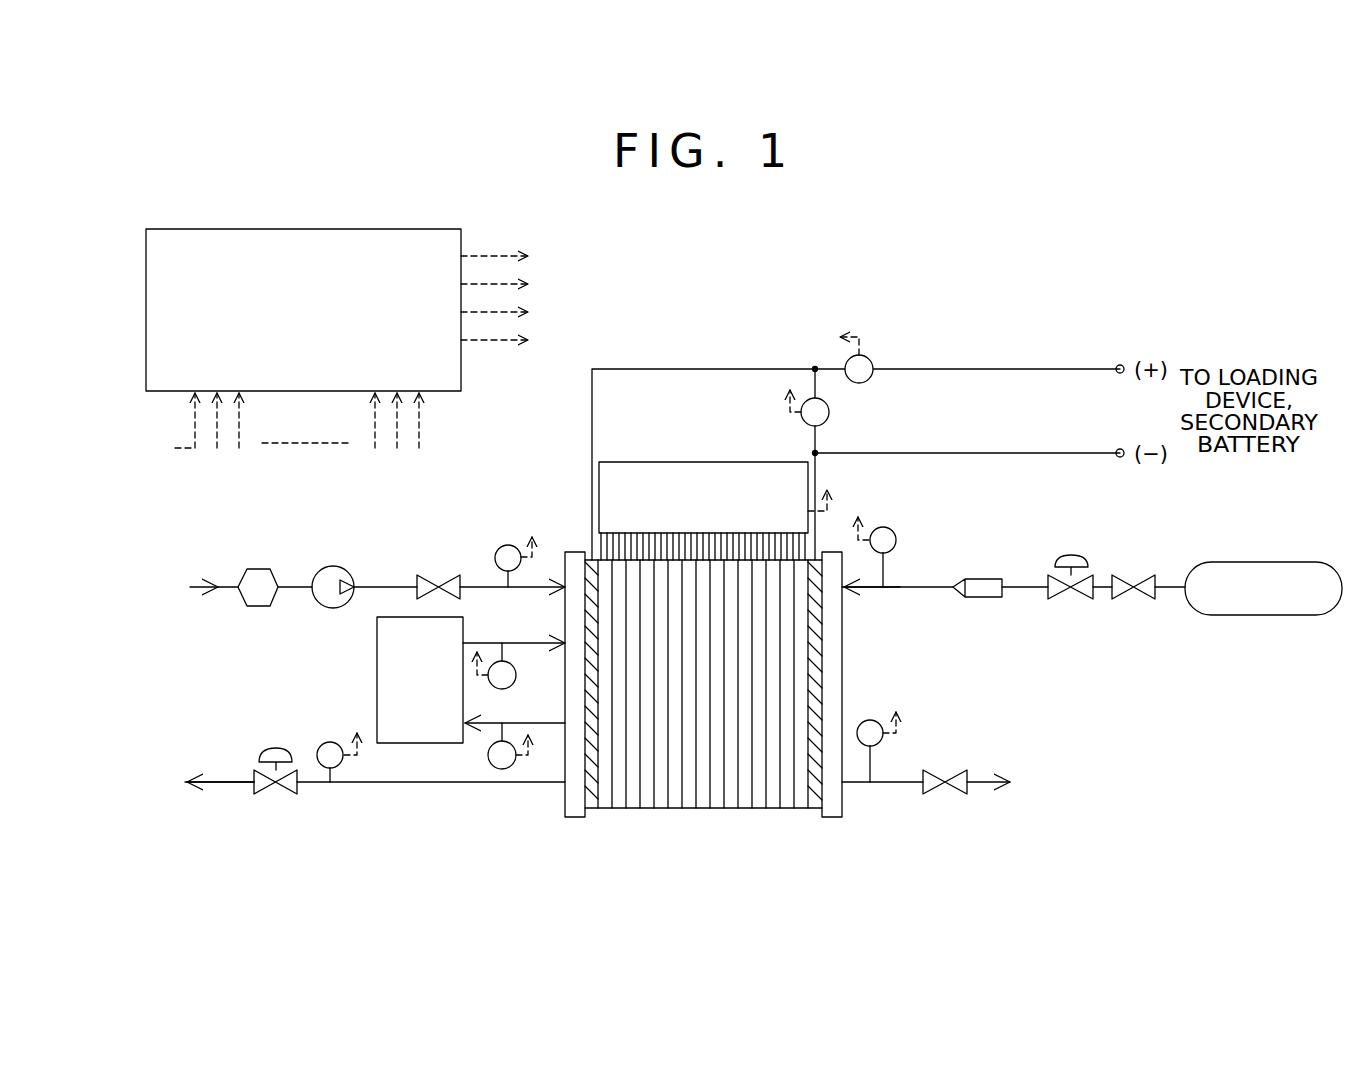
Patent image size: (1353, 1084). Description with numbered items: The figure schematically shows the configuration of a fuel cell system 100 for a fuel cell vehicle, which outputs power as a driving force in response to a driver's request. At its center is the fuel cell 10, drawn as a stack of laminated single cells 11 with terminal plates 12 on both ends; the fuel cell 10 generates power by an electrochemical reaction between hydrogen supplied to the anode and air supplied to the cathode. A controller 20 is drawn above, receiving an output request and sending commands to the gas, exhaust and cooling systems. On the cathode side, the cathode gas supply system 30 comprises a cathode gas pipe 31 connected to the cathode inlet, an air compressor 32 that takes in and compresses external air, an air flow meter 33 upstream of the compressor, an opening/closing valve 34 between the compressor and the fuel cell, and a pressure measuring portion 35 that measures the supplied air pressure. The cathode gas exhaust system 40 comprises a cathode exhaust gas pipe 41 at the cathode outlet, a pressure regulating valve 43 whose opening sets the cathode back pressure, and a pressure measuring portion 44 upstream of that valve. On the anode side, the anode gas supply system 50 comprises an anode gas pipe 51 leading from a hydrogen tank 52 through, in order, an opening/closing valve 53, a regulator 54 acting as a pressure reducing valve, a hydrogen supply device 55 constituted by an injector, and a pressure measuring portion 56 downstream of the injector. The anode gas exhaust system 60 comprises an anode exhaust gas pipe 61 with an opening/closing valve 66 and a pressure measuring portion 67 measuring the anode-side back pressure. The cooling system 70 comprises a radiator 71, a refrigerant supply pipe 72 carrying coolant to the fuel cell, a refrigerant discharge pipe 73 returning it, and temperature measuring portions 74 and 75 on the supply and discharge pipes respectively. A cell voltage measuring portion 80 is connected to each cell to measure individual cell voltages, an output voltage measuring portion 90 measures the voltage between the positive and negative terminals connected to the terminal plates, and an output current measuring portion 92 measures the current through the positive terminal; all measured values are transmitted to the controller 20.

The fuel cell system 100 is at (1192, 185).
The fuel cell 10 is at (728, 710).
The single cell 11 is at (606, 800).
The terminal plate 12 is at (590, 800).
The controller 20 is at (463, 240).
The cathode gas supply system 30 is at (316, 551).
The cathode gas pipe 31 is at (389, 586).
The air compressor 32 is at (338, 567).
The air flow meter 33 is at (265, 568).
The opening/closing valve 34 is at (433, 580).
The pressure measuring portion 35 is at (506, 545).
The cathode gas exhaust system 40 is at (372, 775).
The cathode exhaust gas pipe 41 is at (235, 781).
The pressure regulating valve 43 is at (270, 747).
The pressure measuring portion 44 is at (323, 742).
The anode gas supply system 50 is at (1092, 560).
The anode gas pipe 51 is at (940, 586).
The hydrogen tank 52 is at (1254, 562).
The opening/closing valve 53 is at (1125, 575).
The regulator 54 is at (1075, 555).
The hydrogen supply device 55 is at (988, 598).
The pressure measuring portion 56 is at (895, 530).
The anode gas exhaust system 60 is at (927, 745).
The anode exhaust gas pipe 61 is at (880, 785).
The opening/closing valve 66 is at (962, 772).
The pressure measuring portion 67 is at (860, 721).
The cooling system 70 is at (452, 722).
The radiator 71 is at (377, 685).
The refrigerant supply pipe 72 is at (513, 642).
The refrigerant discharge pipe 73 is at (518, 722).
The temperature measuring portion 74 is at (500, 661).
The temperature measuring portion 75 is at (502, 770).
The cell voltage measuring portion 80 is at (657, 462).
The output voltage measuring portion 90 is at (829, 412).
The output current measuring portion 92 is at (873, 363).